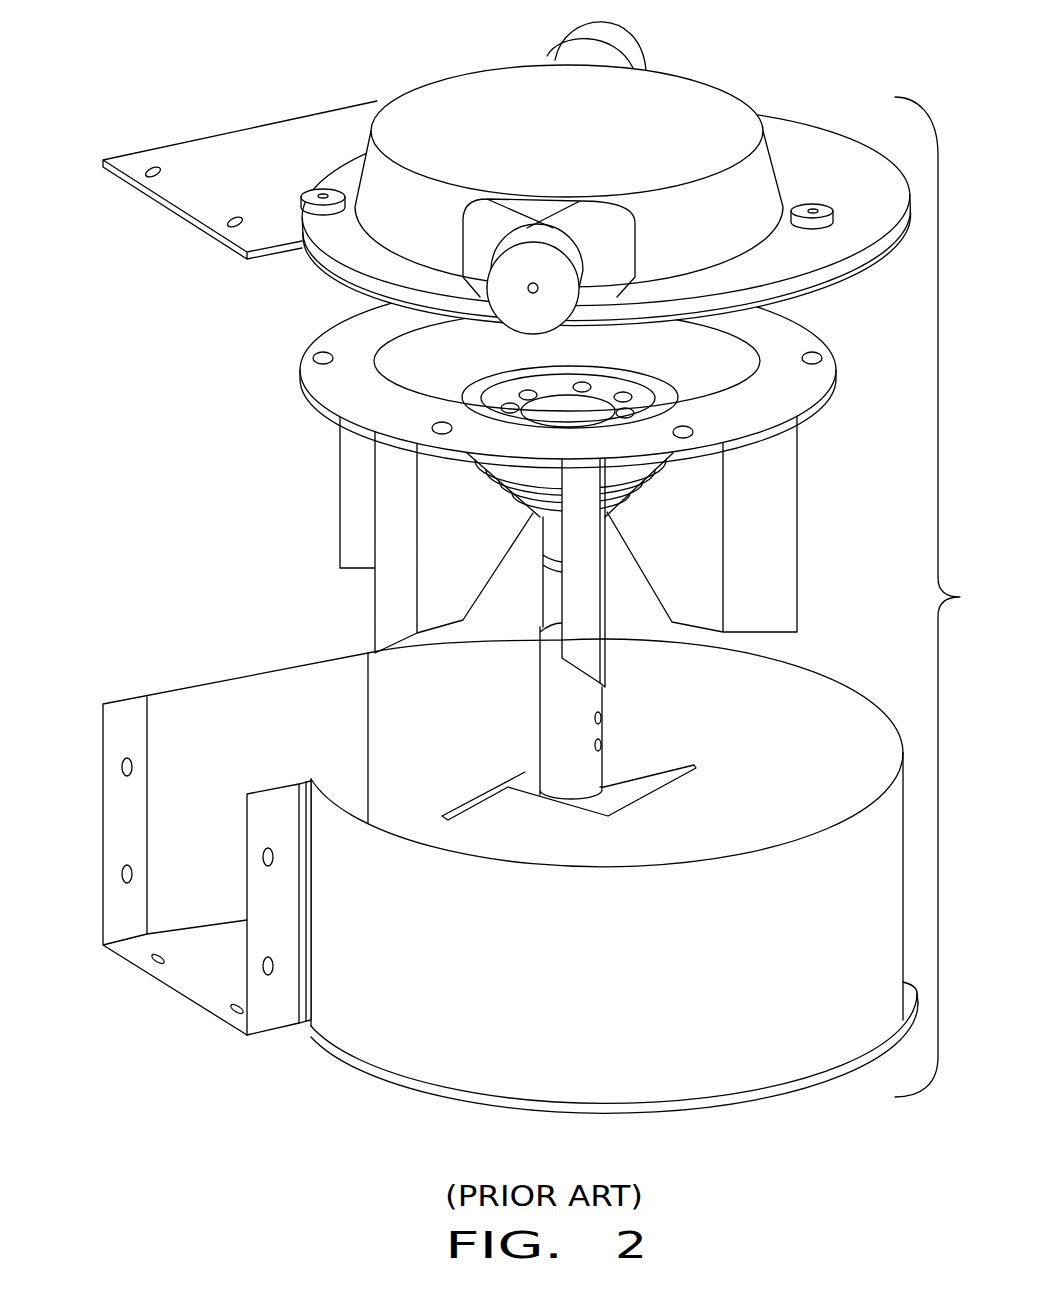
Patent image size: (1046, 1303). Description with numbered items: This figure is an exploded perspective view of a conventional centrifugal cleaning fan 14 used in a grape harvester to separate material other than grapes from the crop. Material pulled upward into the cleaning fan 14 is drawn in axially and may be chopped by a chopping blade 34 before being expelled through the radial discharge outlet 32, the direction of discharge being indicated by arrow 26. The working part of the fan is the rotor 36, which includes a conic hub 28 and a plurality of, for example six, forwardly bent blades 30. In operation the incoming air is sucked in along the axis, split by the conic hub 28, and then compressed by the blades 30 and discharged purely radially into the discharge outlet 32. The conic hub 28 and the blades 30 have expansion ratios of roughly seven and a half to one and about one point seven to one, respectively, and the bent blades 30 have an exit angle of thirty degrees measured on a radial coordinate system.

The cleaning fan 14 is at (820, 89).
The arrow 26 is at (481, 871).
The conic hub 28 is at (630, 497).
The forwardly bent blades 30 is at (375, 543).
The radial discharge outlet 32 is at (220, 733).
The chopping blade 34 is at (617, 787).
The rotor 36 is at (526, 540).